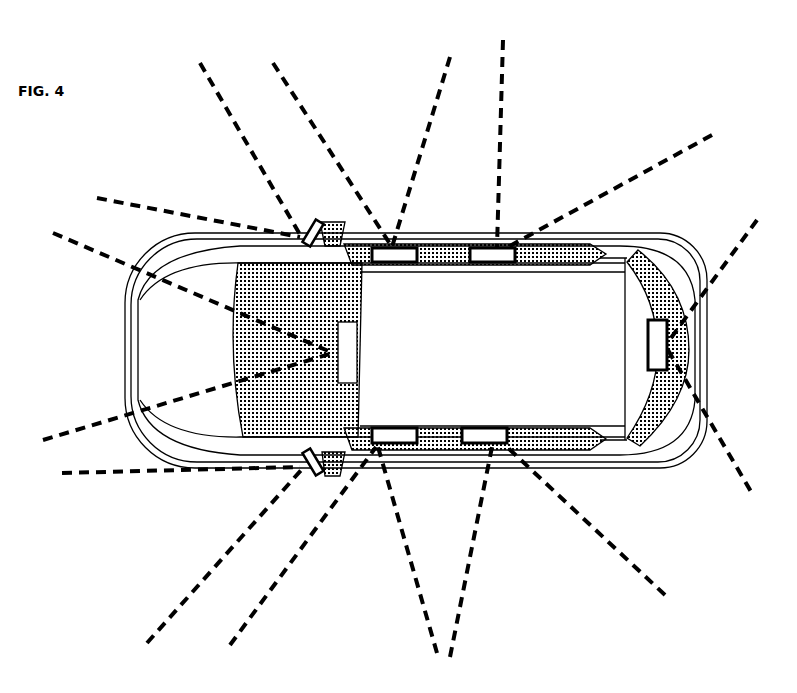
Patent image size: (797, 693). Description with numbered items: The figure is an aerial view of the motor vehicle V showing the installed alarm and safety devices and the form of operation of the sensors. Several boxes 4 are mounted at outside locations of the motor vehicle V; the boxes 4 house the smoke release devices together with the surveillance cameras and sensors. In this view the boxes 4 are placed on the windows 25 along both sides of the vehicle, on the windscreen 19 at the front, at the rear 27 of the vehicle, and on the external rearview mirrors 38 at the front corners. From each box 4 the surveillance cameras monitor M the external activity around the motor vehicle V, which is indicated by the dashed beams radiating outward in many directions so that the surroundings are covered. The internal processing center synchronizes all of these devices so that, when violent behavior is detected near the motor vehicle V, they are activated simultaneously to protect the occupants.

The box 4 is at (650, 342).
The windscreen 19 is at (245, 342).
The window 25 is at (448, 248).
The rear sensor region 27 is at (670, 290).
The external rearview mirror 38 is at (337, 217).
The monitor M is at (103, 193).
The motor vehicle V is at (122, 370).